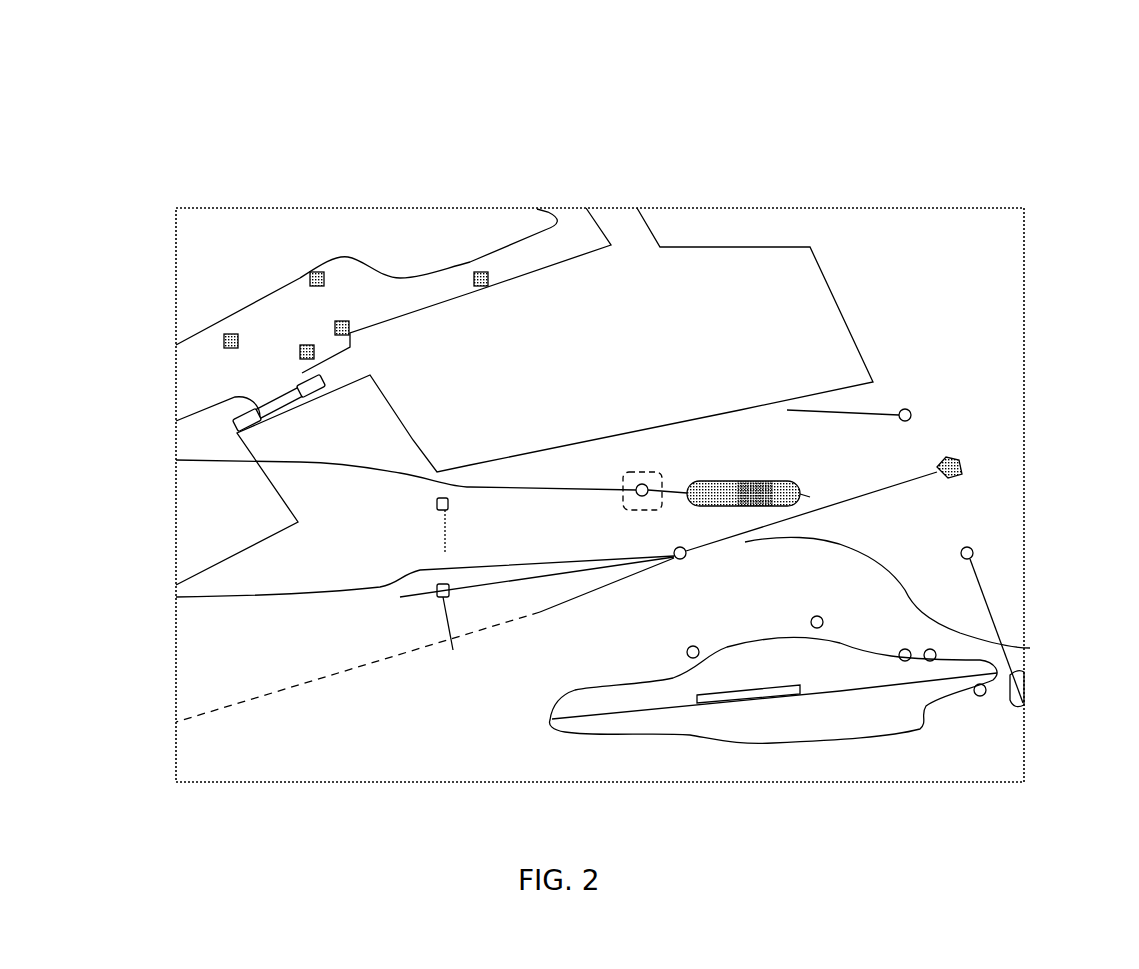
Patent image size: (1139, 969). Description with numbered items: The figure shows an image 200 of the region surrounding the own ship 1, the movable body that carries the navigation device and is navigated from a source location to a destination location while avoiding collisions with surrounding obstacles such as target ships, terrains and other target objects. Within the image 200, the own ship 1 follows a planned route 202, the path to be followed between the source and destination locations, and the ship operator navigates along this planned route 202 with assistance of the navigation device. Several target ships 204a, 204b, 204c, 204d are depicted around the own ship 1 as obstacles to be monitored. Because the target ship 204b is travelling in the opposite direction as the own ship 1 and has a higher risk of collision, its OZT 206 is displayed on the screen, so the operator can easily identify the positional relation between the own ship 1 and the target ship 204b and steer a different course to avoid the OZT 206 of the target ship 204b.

The image 200 is at (120, 88).
The planned route 202 is at (1030, 648).
The target ship 204a is at (905, 409).
The target ship 204b is at (176, 460).
The target ship 204c is at (176, 597).
The target ship 204d is at (973, 553).
The OZT 206 is at (731, 483).
The own ship 1 is at (960, 472).